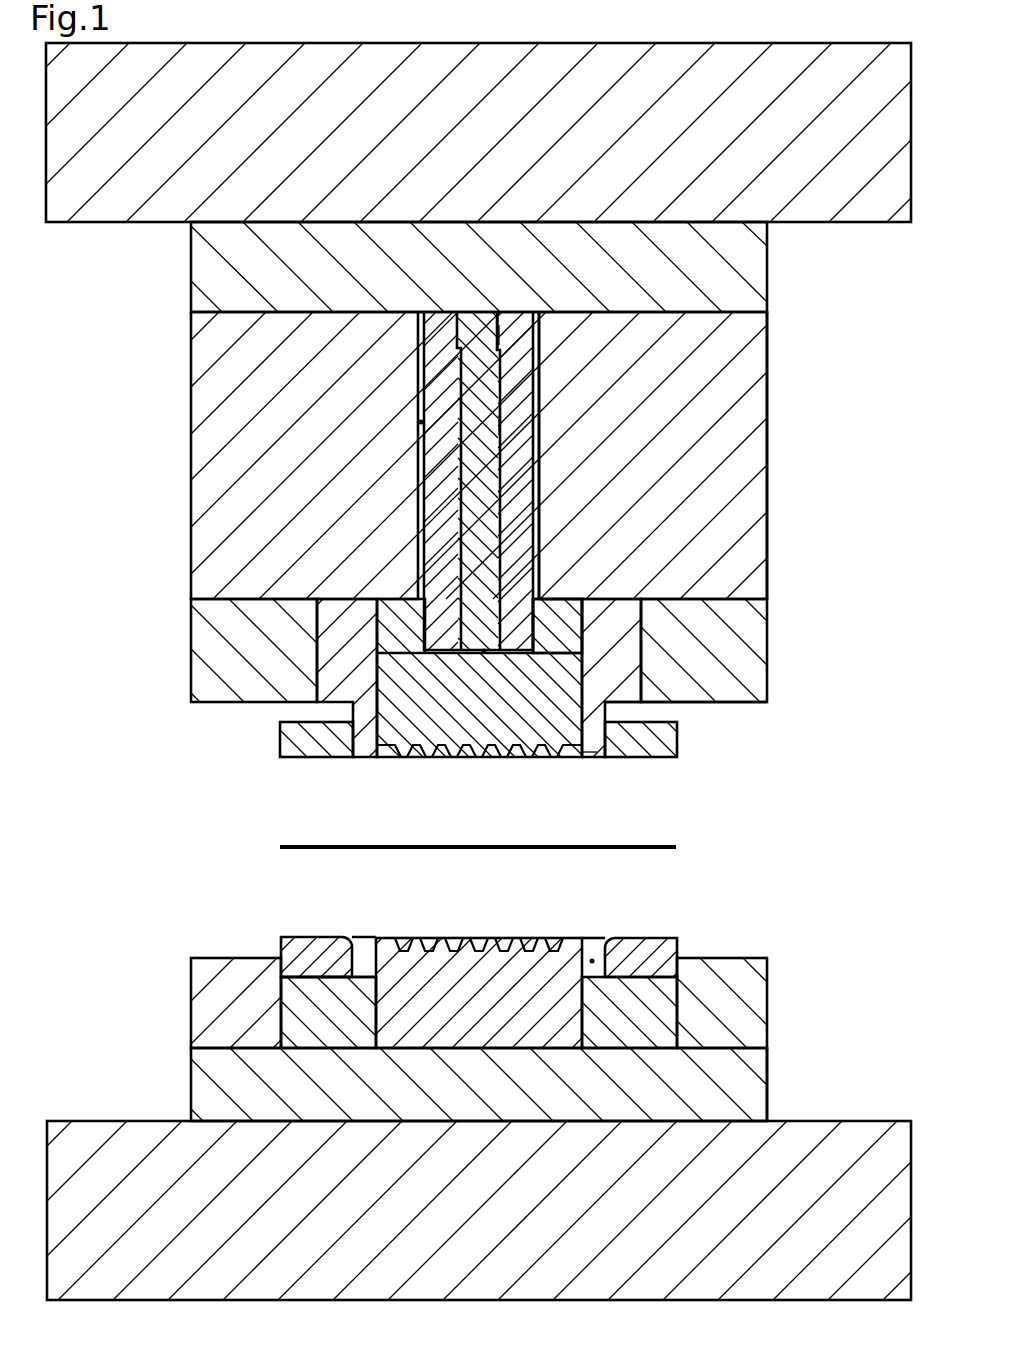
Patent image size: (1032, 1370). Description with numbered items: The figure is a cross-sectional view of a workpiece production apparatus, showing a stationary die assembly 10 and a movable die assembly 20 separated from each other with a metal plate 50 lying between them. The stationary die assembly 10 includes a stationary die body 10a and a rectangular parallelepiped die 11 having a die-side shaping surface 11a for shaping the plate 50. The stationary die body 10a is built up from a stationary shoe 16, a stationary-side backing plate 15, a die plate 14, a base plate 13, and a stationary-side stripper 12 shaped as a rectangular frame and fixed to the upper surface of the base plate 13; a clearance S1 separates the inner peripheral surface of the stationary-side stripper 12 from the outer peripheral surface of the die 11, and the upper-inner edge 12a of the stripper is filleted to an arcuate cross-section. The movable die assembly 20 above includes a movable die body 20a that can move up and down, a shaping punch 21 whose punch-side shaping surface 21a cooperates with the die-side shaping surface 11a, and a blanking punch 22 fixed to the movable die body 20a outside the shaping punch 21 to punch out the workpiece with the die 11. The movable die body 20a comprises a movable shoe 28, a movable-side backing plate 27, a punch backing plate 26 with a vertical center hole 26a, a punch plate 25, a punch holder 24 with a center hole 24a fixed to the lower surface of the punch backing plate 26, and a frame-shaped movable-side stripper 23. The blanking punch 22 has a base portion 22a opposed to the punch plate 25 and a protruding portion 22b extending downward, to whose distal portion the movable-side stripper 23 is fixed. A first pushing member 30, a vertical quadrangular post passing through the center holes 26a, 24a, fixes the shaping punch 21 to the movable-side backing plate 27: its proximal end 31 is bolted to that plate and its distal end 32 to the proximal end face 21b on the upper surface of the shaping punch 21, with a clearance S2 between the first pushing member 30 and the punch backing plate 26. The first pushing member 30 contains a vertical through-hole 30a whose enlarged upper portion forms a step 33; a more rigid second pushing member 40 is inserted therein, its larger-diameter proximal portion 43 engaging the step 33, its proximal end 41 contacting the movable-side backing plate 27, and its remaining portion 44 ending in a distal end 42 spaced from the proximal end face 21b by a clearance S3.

The stationary die assembly 10 is at (479, 1088).
The stationary die body 10a is at (774, 1073).
The die 11 is at (590, 938).
The die-side shaping surface 11a is at (427, 937).
The stationary-side stripper 12 is at (683, 939).
The upper-inner edge 12a is at (592, 938).
The base plate 13 is at (365, 976).
The die plate 14 is at (213, 957).
The stationary-side backing plate 15 is at (190, 1072).
The stationary shoe 16 is at (80, 1120).
The movable die assembly 20 is at (478, 429).
The movable die body 20a is at (774, 546).
The shaping punch 21 is at (355, 745).
The punch-side shaping surface 21a is at (492, 757).
The proximal end face 21b is at (562, 652).
The blanking punch 22 is at (651, 707).
The base portion 22a is at (643, 645).
The protruding portion 22b is at (604, 752).
The movable-side stripper 23 is at (678, 740).
The punch holder 24 is at (366, 607).
The center hole 24a is at (430, 620).
The punch plate 25 is at (768, 650).
The punch backing plate 26 is at (768, 345).
The center hole 26a is at (537, 503).
The movable-side backing plate 27 is at (768, 272).
The movable shoe 28 is at (878, 224).
The first pushing member 30 is at (536, 386).
The through-hole 30a is at (462, 377).
The proximal end 31 is at (517, 311).
The distal end 32 is at (519, 656).
The step 33 is at (497, 350).
The second pushing member 40 is at (500, 462).
The proximal end 41 is at (468, 311).
The distal end 42 is at (468, 656).
The proximal portion 43 is at (500, 333).
The remaining portion 44 is at (500, 425).
The metal plate 50 is at (677, 847).
The clearance S1 is at (594, 961).
The clearance S2 is at (420, 422).
The clearance S3 is at (484, 654).